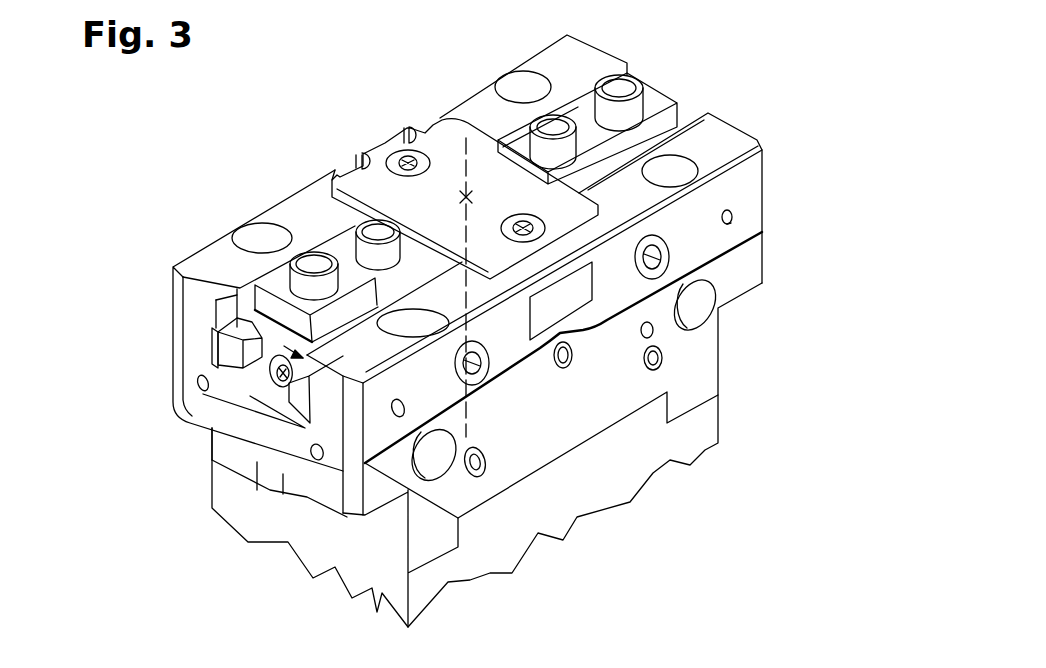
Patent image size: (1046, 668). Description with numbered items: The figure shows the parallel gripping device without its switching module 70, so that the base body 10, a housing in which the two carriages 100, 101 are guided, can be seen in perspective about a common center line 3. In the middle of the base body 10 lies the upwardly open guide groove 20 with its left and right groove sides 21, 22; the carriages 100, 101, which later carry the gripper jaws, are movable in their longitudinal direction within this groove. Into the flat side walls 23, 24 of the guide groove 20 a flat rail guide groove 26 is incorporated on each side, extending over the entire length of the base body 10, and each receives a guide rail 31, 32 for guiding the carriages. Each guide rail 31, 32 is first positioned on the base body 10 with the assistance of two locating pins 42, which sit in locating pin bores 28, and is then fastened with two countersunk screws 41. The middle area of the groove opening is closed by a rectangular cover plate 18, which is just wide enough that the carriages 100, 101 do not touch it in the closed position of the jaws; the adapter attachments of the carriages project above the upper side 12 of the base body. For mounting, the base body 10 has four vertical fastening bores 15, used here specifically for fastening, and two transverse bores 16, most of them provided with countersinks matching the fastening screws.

The center line 3 is at (466, 178).
The base body 10 is at (222, 232).
The upper side of base body 12 is at (307, 207).
The vertical fastening bores 15 is at (698, 168).
The transverse bores 16 is at (715, 300).
The cover plate 18 is at (573, 208).
The guide groove 20 is at (206, 396).
The left groove side 21 is at (218, 306).
The right groove side 22 is at (304, 429).
The side wall of guide groove 23 is at (229, 312).
The side wall of guide groove 24 is at (305, 363).
The rail guide groove 26 is at (218, 340).
The locating pin bores 28 is at (733, 217).
The guide rail 31 is at (234, 351).
The guide rail 32 is at (309, 411).
The countersunk screws 41 is at (662, 255).
The locating pins 42 is at (730, 223).
The switching module 70 is at (567, 467).
The carriage 100 is at (246, 289).
The carriage 101 is at (685, 102).